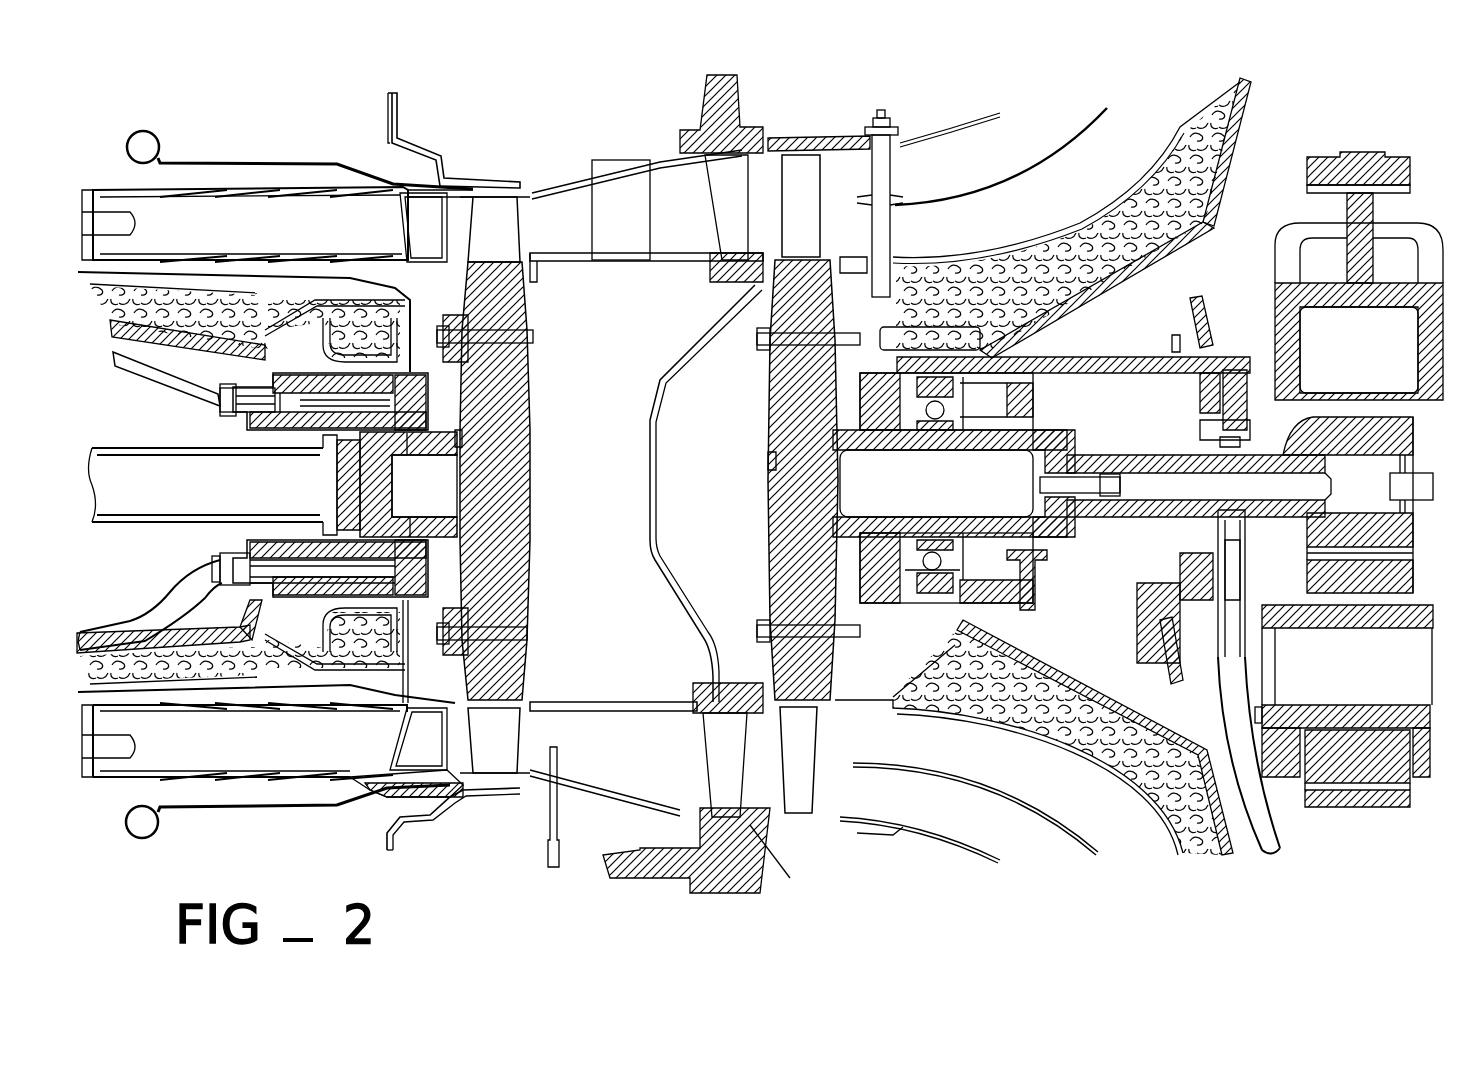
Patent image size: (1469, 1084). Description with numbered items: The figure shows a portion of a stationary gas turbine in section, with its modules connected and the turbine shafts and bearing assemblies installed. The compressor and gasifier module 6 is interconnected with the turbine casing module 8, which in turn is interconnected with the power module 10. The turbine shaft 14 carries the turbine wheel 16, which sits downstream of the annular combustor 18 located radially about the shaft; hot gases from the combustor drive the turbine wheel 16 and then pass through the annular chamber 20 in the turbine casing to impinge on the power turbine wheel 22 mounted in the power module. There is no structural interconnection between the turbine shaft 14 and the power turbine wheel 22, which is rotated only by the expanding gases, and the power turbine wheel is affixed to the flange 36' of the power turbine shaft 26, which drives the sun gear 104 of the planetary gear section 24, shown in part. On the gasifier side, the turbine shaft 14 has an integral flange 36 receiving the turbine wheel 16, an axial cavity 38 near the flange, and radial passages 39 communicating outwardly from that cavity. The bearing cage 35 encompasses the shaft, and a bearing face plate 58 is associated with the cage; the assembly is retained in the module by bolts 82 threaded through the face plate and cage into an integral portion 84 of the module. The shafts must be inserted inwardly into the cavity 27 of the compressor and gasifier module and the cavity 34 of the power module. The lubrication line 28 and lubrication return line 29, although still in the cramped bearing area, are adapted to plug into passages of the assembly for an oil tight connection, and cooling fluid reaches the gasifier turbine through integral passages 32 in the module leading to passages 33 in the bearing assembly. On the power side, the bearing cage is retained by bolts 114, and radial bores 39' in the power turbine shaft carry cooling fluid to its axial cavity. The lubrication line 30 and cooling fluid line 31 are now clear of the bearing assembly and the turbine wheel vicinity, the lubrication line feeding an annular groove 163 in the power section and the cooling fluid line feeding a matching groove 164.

The compressor and gasifier module 6 is at (255, 124).
The turbine casing module 8 is at (600, 136).
The power module 10 is at (1268, 132).
The turbine shaft 14 is at (160, 494).
The turbine wheel 16 is at (512, 410).
The annular combustor 18 is at (218, 239).
The annular chamber 20 is at (533, 234).
The power turbine wheel 22 is at (773, 413).
The planetary gear section 24 is at (1346, 142).
The power turbine shaft 26 is at (1077, 432).
The cavity 27 is at (170, 431).
The lubrication line 28 is at (135, 385).
The lubrication return line 29 is at (178, 592).
The lubrication line 30 is at (1210, 318).
The cooling fluid line 31 is at (1183, 670).
The integral passages 32 is at (190, 345).
The passages 33 is at (372, 600).
The cavity 34 is at (1062, 344).
The bearing cage 35 is at (392, 300).
The flange 36 is at (522, 442).
The flange 36' is at (729, 477).
The axial cavity 38 is at (432, 496).
The radial passages 39 is at (424, 485).
The radial bores 39' is at (936, 480).
The bearing face plate 58 is at (398, 363).
The bolts 82 is at (505, 362).
The integral portion 84 is at (339, 341).
The sun gear 104 is at (1423, 423).
The bolts 114 is at (950, 330).
The annular groove 163 is at (1175, 345).
The groove 164 is at (1160, 622).